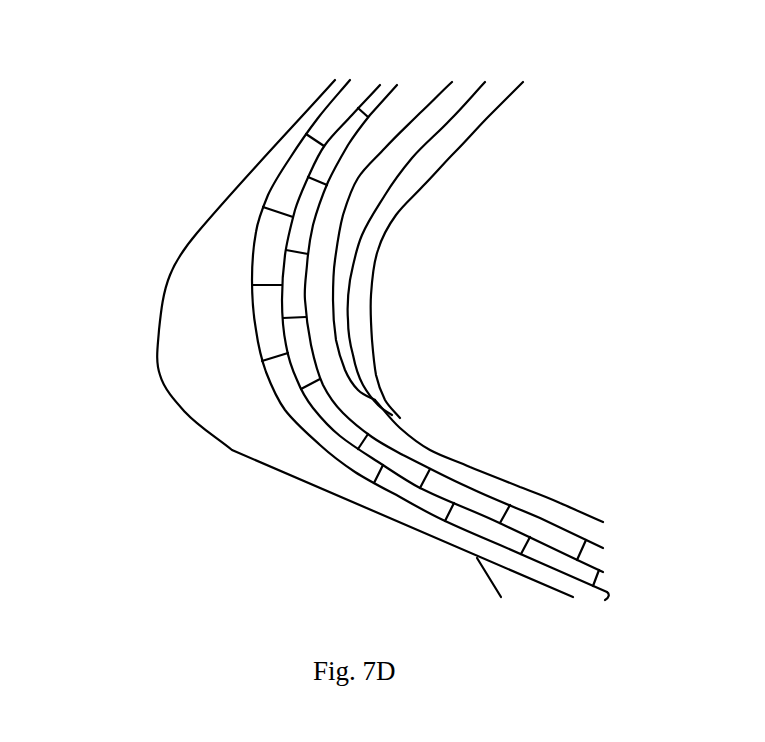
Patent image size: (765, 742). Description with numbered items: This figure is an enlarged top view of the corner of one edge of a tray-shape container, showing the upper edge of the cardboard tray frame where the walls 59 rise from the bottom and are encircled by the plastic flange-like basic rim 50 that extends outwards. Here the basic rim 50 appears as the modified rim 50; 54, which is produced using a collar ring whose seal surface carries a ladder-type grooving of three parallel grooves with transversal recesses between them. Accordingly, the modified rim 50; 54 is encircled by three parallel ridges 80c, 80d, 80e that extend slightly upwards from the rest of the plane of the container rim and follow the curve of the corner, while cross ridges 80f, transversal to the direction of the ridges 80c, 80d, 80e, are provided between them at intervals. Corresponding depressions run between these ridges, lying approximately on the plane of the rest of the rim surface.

The basic rim 50 is at (349, 338).
The modified rim 54 is at (300, 370).
The ridge 80c is at (255, 237).
The ridge 80d is at (303, 181).
The ridge 80e is at (371, 112).
The cross ridge 80f is at (312, 386).
The walls 59 is at (490, 194).